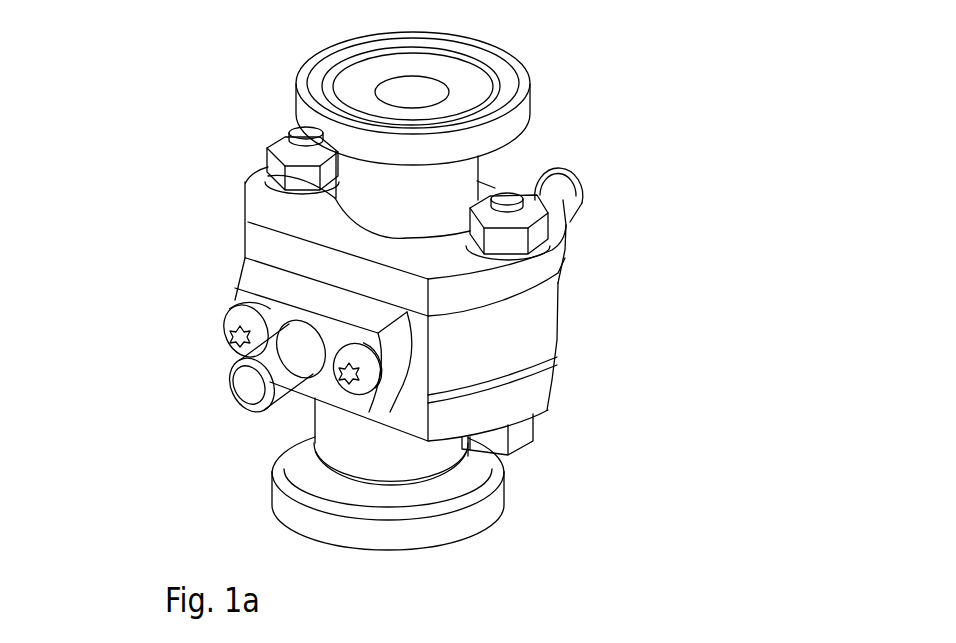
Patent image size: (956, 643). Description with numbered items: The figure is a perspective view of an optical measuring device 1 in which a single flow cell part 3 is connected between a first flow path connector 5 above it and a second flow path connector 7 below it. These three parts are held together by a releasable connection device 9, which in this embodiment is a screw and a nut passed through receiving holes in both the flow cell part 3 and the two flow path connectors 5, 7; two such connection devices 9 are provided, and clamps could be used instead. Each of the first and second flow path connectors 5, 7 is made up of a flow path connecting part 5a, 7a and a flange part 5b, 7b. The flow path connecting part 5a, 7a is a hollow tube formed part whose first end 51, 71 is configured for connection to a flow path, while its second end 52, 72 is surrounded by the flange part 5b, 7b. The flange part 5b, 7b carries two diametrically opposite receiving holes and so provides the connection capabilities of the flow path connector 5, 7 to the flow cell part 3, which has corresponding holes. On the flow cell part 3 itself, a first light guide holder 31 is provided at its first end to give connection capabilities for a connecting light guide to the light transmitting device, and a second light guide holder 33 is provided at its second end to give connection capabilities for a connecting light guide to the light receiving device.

The optical measuring device 1 is at (642, 98).
The flow cell part 3 is at (574, 312).
The first flow path connector 5 is at (240, 103).
The flow path connecting part 5a is at (477, 181).
The flange part 5b is at (247, 228).
The second flow path connector 7 is at (539, 488).
The flow path connecting part 7a is at (318, 462).
The flange part 7b is at (547, 400).
The releasable connection device 9 is at (292, 148).
The first light guide holder 31 is at (578, 182).
The second light guide holder 33 is at (238, 370).
The first end 51 is at (308, 72).
The second end 52 is at (335, 198).
The first end 71 is at (477, 527).
The second end 72 is at (337, 411).